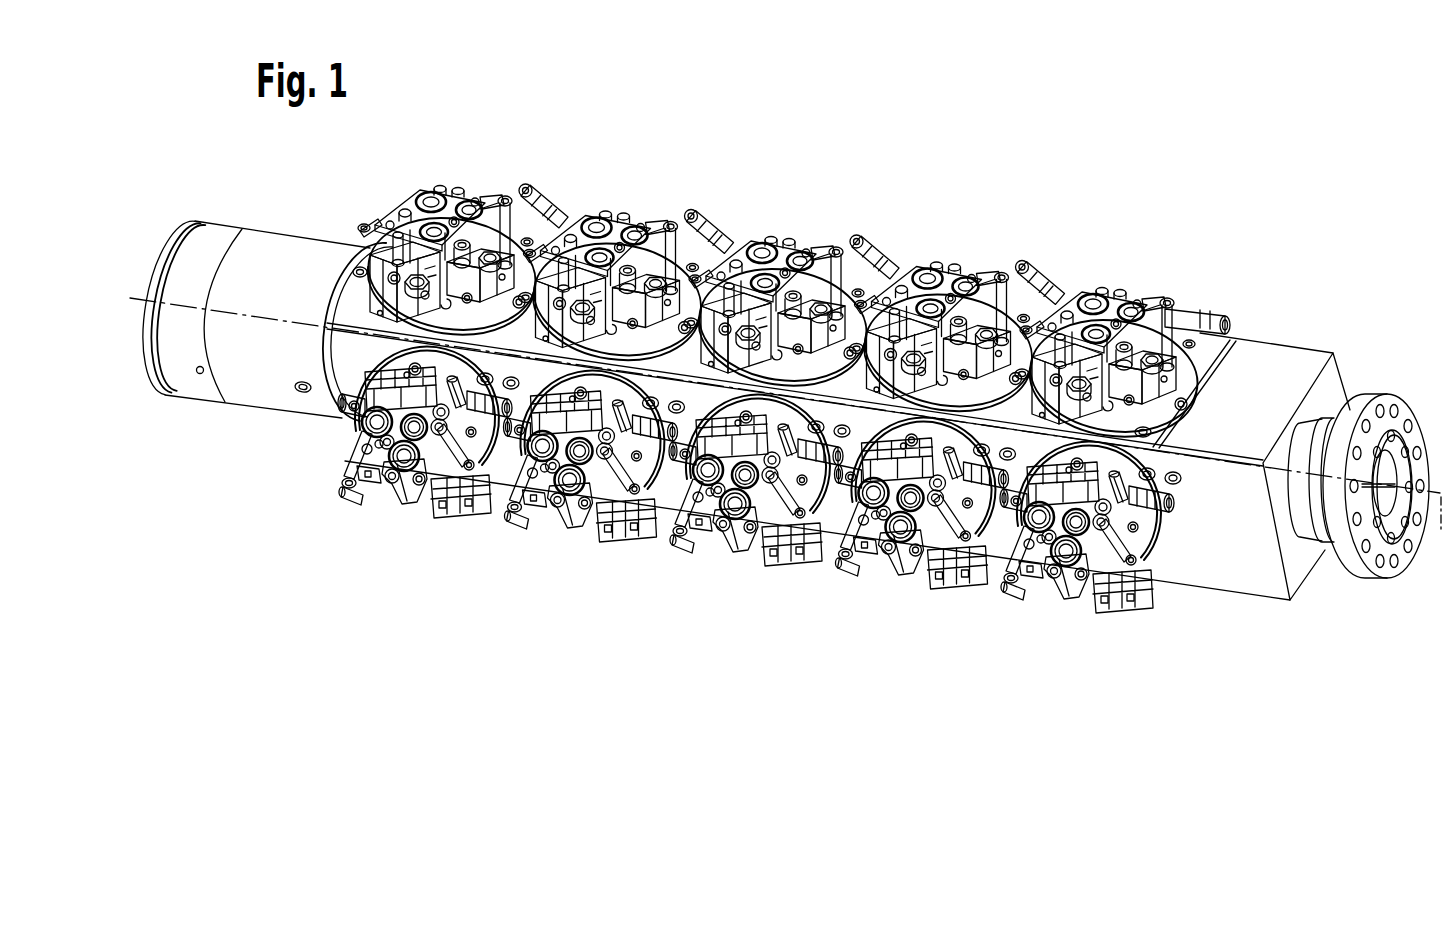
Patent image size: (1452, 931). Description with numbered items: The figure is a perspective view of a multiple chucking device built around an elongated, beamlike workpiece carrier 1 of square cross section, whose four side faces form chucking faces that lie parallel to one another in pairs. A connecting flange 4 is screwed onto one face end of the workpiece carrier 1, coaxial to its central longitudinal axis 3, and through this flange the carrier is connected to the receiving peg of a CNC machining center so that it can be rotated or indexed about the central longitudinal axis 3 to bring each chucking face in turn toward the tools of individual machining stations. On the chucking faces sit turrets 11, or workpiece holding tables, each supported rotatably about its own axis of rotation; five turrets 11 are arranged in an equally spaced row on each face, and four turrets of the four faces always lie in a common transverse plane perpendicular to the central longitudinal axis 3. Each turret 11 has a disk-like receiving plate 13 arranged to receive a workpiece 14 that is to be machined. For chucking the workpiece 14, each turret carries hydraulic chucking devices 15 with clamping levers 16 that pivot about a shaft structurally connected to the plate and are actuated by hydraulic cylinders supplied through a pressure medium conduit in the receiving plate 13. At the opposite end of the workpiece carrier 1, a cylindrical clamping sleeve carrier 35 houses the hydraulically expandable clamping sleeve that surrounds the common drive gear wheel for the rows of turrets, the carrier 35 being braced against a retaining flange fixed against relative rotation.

The workpiece carrier 1 is at (1284, 234).
The central longitudinal axis 3 is at (787, 432).
The connecting flange 4 is at (1378, 400).
The turret 11 is at (1200, 355).
The receiving plate 13 is at (332, 385).
The workpiece 14 is at (801, 262).
The hydraulic chucking device 15 is at (1030, 273).
The clamping lever 16 is at (1112, 290).
The clamping sleeve carrier 35 is at (248, 383).